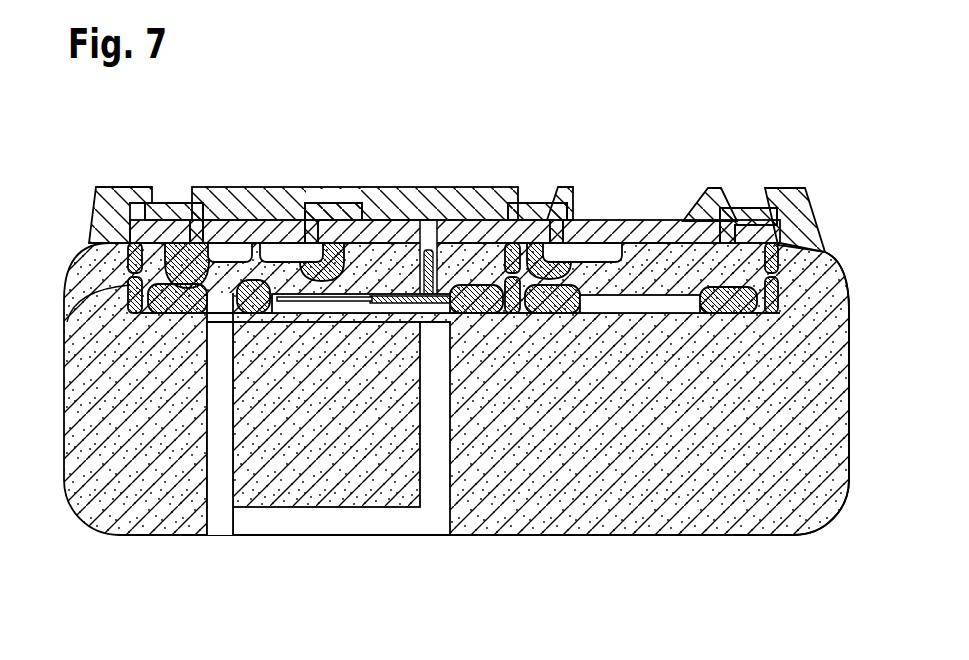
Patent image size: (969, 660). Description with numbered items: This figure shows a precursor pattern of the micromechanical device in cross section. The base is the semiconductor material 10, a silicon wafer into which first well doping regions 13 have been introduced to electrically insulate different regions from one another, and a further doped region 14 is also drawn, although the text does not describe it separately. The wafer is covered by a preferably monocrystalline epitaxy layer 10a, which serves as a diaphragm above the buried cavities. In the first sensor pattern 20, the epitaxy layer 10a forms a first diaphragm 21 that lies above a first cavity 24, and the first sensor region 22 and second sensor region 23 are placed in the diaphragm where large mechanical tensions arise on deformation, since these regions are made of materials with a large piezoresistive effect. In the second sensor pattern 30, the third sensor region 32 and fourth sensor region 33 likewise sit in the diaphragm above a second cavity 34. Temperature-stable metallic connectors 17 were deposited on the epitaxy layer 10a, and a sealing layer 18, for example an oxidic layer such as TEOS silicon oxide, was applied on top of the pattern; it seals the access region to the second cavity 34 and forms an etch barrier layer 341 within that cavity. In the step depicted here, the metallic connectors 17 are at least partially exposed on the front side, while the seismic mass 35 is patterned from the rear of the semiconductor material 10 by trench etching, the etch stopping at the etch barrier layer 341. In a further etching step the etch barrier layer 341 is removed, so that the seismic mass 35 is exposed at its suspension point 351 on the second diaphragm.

The semiconductor material 10 is at (635, 507).
The epitaxy layer 10a is at (800, 247).
The first well doping regions 13 is at (760, 245).
The sealing strip 14 is at (783, 293).
The metallic connectors 17 is at (317, 212).
The sealing layer 18 is at (427, 188).
The first sensor pattern 20 is at (767, 89).
The first diaphragm 21 is at (700, 138).
The first sensor region 22 is at (716, 235).
The second sensor region 23 is at (565, 250).
The first cavity 24 is at (655, 300).
The second sensor pattern 30 is at (123, 88).
The third sensor region 32 is at (277, 250).
The fourth sensor region 33 is at (210, 250).
The second cavity 34 is at (405, 305).
The etch barrier layer 341 is at (397, 300).
The seismic mass 35 is at (287, 473).
The suspension point 351 is at (230, 330).